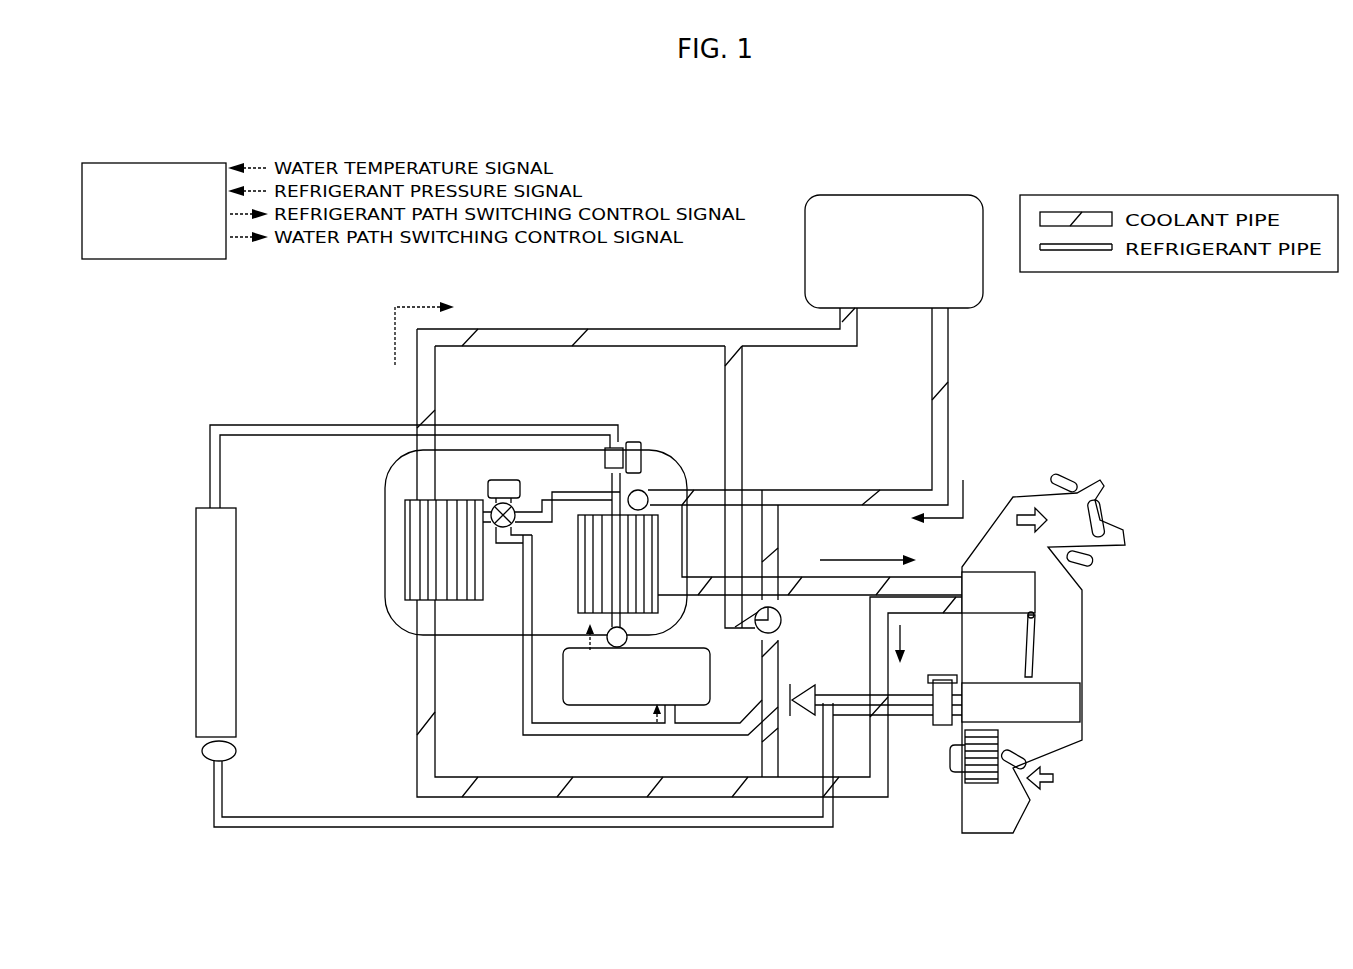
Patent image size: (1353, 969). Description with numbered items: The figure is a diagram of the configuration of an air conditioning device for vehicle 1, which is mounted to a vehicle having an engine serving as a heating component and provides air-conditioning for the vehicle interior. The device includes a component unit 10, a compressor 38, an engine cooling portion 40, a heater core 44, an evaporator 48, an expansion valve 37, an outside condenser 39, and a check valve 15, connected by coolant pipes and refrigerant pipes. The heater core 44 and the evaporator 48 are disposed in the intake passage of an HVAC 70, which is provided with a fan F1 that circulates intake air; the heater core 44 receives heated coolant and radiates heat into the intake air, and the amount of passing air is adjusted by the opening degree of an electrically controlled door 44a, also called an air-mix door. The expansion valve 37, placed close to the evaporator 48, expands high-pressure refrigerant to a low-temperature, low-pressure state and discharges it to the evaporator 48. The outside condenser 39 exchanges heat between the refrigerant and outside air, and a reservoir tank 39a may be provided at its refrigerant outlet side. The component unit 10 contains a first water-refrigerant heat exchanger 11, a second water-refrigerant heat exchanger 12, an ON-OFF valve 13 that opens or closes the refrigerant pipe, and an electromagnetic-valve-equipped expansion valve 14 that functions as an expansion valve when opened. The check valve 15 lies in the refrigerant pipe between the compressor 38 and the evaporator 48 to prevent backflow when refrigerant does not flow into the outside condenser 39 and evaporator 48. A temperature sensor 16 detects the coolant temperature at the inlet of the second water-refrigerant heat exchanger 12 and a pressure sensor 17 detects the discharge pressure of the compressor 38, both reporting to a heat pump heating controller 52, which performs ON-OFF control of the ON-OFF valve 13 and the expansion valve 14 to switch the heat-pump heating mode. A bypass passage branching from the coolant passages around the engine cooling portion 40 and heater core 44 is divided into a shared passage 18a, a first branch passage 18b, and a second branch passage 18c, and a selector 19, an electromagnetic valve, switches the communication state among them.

The air conditioning device for vehicle 1 is at (800, 167).
The component unit 10 is at (390, 450).
The first water-refrigerant heat exchanger 11 is at (467, 601).
The second water-refrigerant heat exchanger 12 is at (659, 539).
The ON-OFF valve 13 is at (641, 446).
The electromagnetic-valve-equipped expansion valve 14 is at (503, 480).
The check valve 15 is at (802, 716).
The temperature sensor 16 is at (649, 496).
The pressure sensor 17 is at (628, 639).
The shared passage 18a is at (779, 660).
The first branch passage 18b is at (779, 544).
The second branch passage 18c is at (743, 450).
The selector 19 is at (782, 621).
The expansion valve 37 is at (938, 727).
The compressor 38 is at (710, 680).
The outside condenser 39 is at (237, 703).
The reservoir tank 39a is at (238, 751).
The engine cooling portion 40 is at (805, 250).
The heater core 44 is at (993, 571).
The door 44a is at (1037, 648).
The evaporator 48 is at (1083, 713).
The heat pump heating controller 52 is at (161, 163).
The HVAC 70 is at (1083, 611).
The fan F1 is at (975, 784).